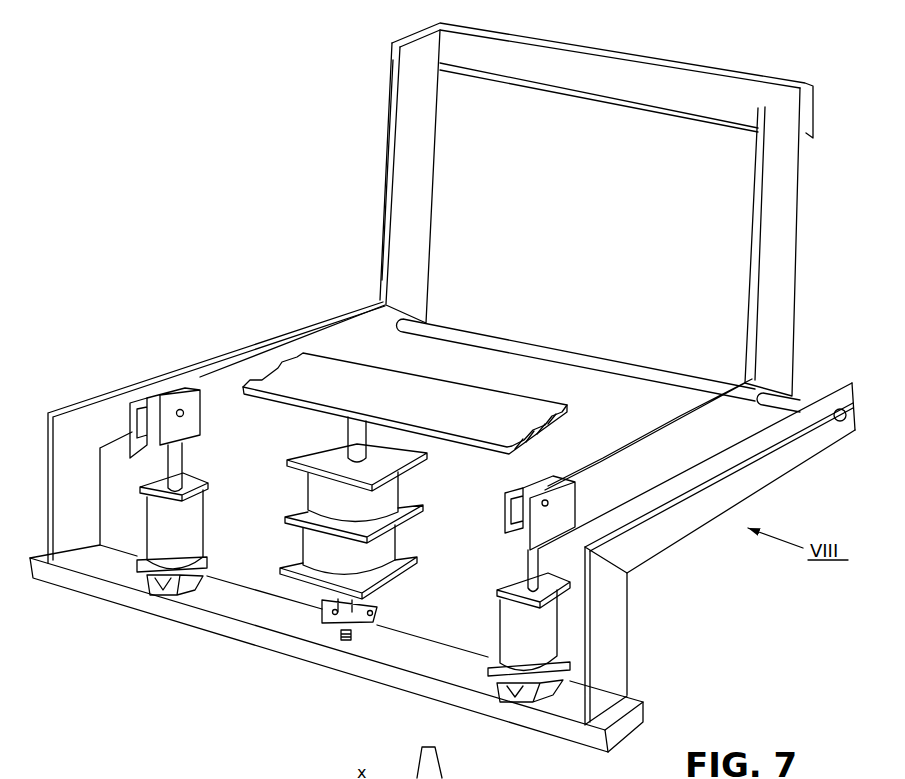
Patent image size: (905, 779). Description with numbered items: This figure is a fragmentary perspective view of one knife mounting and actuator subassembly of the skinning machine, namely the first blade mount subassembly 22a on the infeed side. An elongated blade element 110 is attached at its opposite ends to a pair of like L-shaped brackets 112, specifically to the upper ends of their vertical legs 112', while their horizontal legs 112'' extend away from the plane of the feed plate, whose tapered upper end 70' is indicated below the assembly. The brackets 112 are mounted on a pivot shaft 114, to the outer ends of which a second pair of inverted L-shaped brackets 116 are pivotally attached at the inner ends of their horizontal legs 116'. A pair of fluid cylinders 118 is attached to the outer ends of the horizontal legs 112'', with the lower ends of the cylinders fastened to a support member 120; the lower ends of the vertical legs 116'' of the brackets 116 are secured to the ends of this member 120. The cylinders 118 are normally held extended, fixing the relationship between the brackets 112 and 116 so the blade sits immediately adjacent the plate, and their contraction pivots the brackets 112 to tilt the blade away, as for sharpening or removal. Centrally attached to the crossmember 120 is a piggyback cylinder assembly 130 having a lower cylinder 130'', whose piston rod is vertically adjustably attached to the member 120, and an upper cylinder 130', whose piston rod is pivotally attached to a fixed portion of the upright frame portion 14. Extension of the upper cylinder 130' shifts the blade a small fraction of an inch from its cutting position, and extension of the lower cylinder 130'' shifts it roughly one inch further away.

The blade element 110 is at (632, 78).
The L-shaped brackets 112 is at (591, 228).
The vertical leg 112' is at (443, 176).
The horizontal legs 112'' is at (476, 397).
The first blade mount subassembly 22a is at (383, 203).
The pivot shaft 114 is at (443, 332).
The upright frame portion 14 is at (449, 397).
The inverted L-shaped brackets 116 is at (451, 442).
The horizontal legs 116' is at (814, 439).
The vertical legs 116'' is at (644, 636).
The fluid cylinders 118 is at (190, 510).
The support member 120 is at (207, 622).
The piggyback cylinder assembly 130 is at (388, 528).
The upper cylinder 130' is at (315, 498).
The lower cylinder 130'' is at (392, 549).
The upper end of plate 70' is at (460, 763).